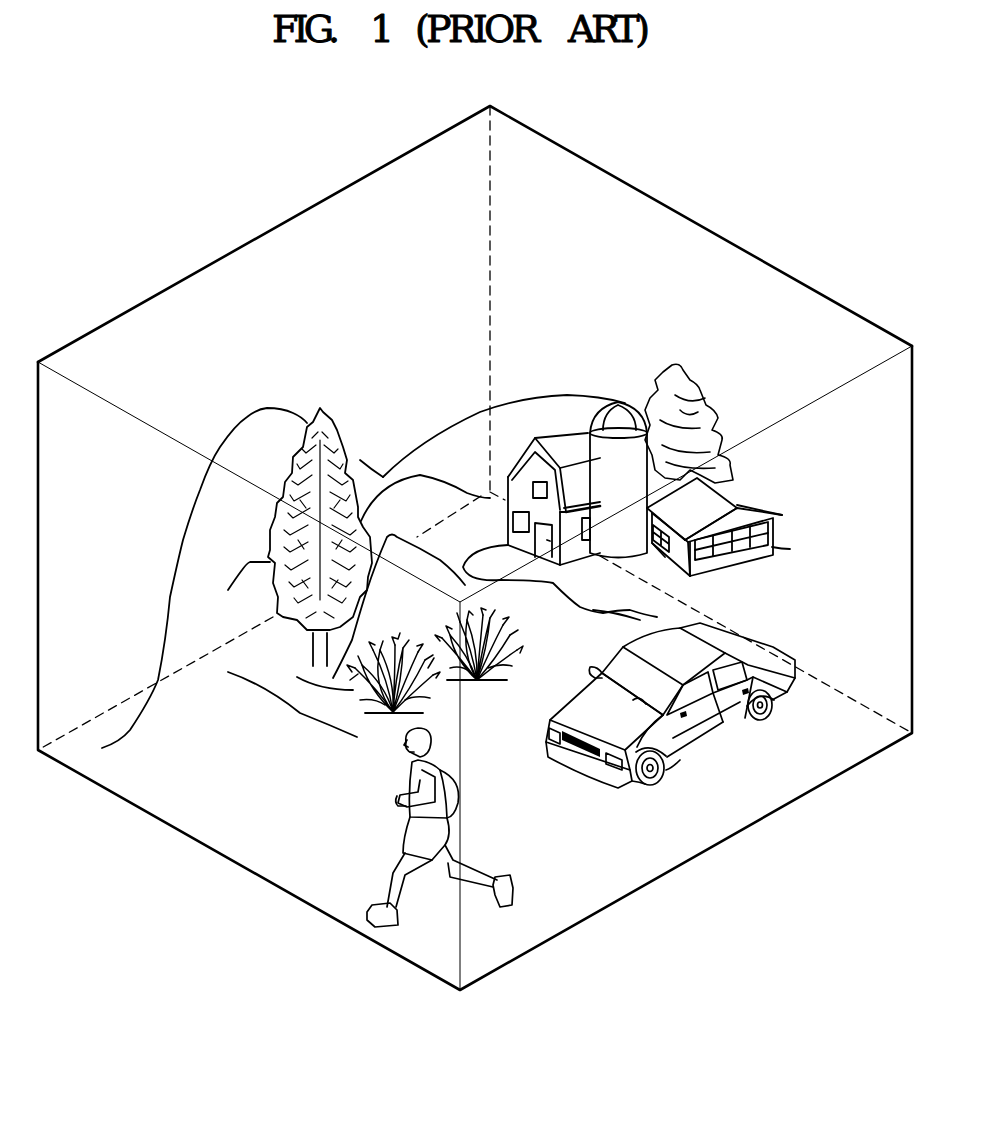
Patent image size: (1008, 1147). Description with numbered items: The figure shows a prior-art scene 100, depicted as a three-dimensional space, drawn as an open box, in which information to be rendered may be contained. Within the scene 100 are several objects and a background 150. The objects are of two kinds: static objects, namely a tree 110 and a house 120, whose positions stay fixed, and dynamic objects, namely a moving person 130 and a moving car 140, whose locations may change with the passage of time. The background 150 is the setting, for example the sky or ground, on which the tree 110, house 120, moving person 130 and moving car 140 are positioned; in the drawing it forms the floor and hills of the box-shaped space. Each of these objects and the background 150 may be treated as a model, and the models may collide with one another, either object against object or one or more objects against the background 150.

The scene 100 is at (672, 158).
The tree 110 is at (327, 420).
The house 120 is at (571, 432).
The moving person 130 is at (407, 785).
The moving car 140 is at (687, 740).
The background 150 is at (227, 810).